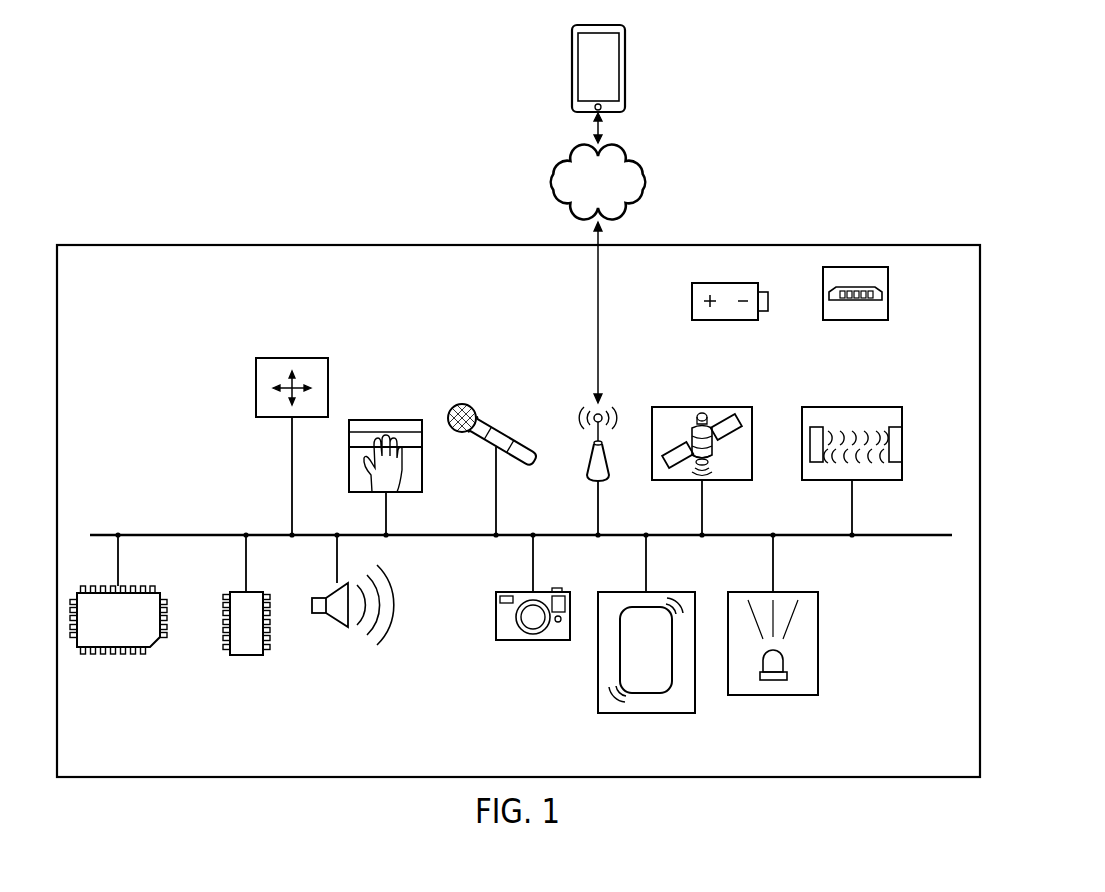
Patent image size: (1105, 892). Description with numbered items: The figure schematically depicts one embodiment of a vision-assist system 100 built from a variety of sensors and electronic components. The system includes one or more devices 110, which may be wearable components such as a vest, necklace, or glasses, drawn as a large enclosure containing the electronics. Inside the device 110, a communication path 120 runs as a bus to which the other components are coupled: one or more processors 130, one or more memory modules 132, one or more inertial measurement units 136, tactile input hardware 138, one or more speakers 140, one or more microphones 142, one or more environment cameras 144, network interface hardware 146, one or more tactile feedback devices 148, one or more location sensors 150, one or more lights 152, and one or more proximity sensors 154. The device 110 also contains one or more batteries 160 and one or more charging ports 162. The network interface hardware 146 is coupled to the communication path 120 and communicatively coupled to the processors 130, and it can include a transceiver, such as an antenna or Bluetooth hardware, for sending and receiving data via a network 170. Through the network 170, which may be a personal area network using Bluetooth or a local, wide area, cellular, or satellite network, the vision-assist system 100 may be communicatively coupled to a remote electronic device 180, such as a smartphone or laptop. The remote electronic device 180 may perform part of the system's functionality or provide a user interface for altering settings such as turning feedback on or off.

The vision-assist system 100 is at (1018, 266).
The device 110 is at (980, 407).
The communication path 120 is at (100, 535).
The processor 130 is at (148, 648).
The memory module 132 is at (246, 655).
The inertial measurement unit 136 is at (292, 358).
The tactile input hardware 138 is at (386, 420).
The speaker 140 is at (337, 627).
The microphone 142 is at (496, 430).
The environment camera 144 is at (533, 641).
The network interface hardware 146 is at (591, 452).
The tactile feedback device 148 is at (646, 713).
The location sensor 150 is at (702, 407).
The light 152 is at (773, 695).
The proximity sensor 154 is at (852, 407).
The battery 160 is at (692, 300).
The charging port 162 is at (888, 297).
The network 170 is at (540, 184).
The remote electronic device 180 is at (572, 57).